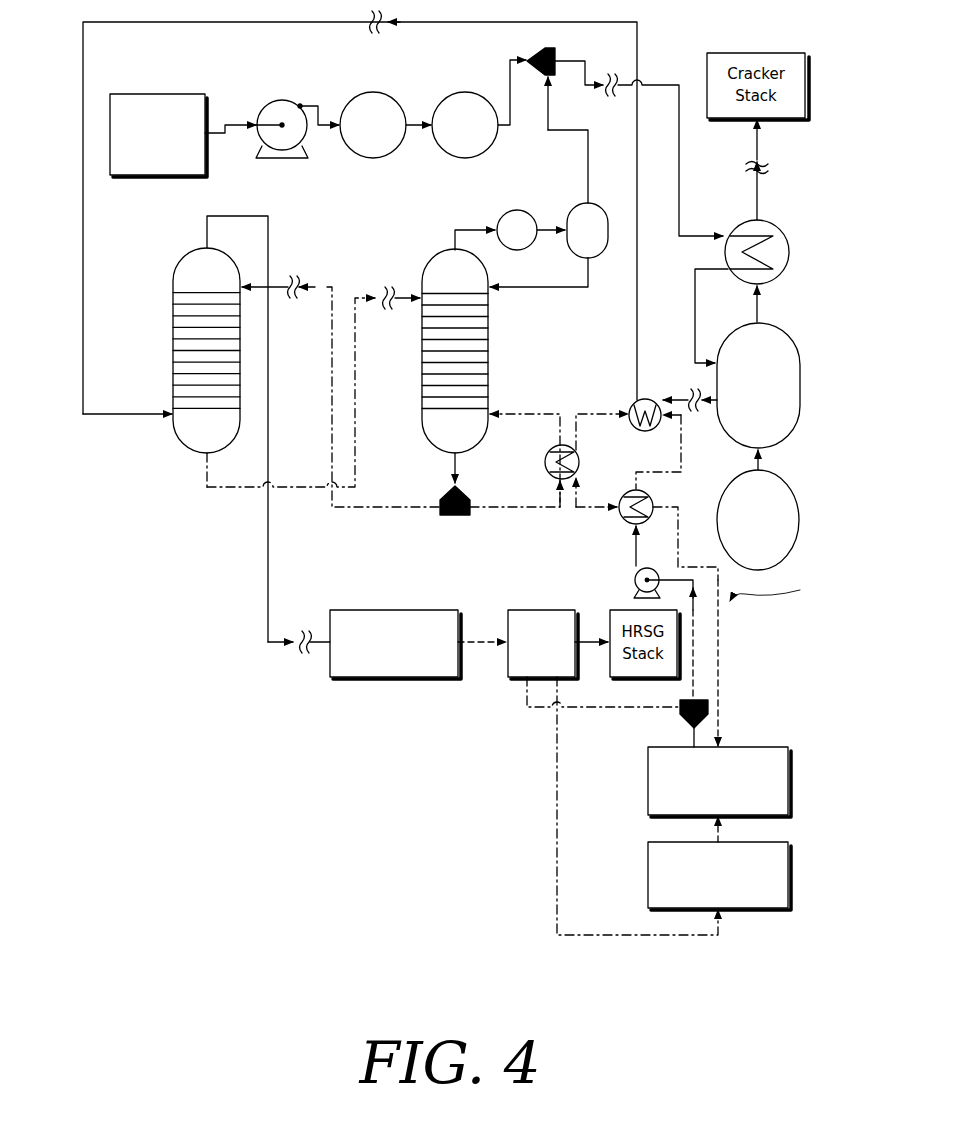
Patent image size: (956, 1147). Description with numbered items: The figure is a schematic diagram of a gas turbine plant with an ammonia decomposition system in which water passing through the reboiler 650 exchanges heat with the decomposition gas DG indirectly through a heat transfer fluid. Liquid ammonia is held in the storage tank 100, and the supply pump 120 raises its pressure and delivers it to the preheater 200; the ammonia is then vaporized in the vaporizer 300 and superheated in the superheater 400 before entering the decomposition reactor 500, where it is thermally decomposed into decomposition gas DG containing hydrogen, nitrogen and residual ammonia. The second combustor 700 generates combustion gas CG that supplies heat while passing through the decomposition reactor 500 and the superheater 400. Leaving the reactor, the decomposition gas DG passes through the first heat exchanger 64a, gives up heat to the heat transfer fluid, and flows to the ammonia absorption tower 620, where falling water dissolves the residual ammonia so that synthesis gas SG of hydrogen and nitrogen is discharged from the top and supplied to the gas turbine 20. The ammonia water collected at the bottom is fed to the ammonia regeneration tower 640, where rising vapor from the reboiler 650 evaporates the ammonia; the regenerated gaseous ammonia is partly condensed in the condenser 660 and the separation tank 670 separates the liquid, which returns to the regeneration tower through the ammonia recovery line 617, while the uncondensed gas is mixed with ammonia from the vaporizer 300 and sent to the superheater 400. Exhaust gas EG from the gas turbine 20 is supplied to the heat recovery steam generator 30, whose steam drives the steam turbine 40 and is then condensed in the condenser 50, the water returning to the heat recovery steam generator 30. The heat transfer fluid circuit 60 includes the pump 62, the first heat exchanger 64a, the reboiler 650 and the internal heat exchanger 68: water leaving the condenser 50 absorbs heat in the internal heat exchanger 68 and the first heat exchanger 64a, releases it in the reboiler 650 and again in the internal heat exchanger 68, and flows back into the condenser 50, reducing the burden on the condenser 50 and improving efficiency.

The storage tank 100 is at (173, 94).
The supply pump 120 is at (285, 106).
The preheater 200 is at (376, 112).
The vaporizer 300 is at (468, 112).
The superheater 400 is at (790, 252).
The decomposition reactor 500 is at (800, 388).
The second combustor 700 is at (800, 525).
The ammonia recovery line 617 is at (540, 290).
The ammonia absorption tower 620 is at (173, 297).
The ammonia regeneration tower 640 is at (422, 425).
The reboiler 650 is at (544, 462).
The condenser 660 is at (517, 211).
The separation tank 670 is at (599, 212).
The first heat exchanger 64a is at (632, 404).
The internal heat exchanger 68 is at (623, 518).
The pump 62 is at (636, 580).
The heat transfer fluid circuit 60 is at (796, 589).
The gas turbine 20 is at (392, 610).
The heat recovery steam generator 30 is at (540, 610).
The steam turbine 40 is at (790, 873).
The condenser 50 is at (790, 780).
The decomposition gas DG is at (83, 80).
The synthesis gas SG is at (268, 553).
The exhaust gas EG is at (475, 640).
The combustion gas CG is at (762, 461).